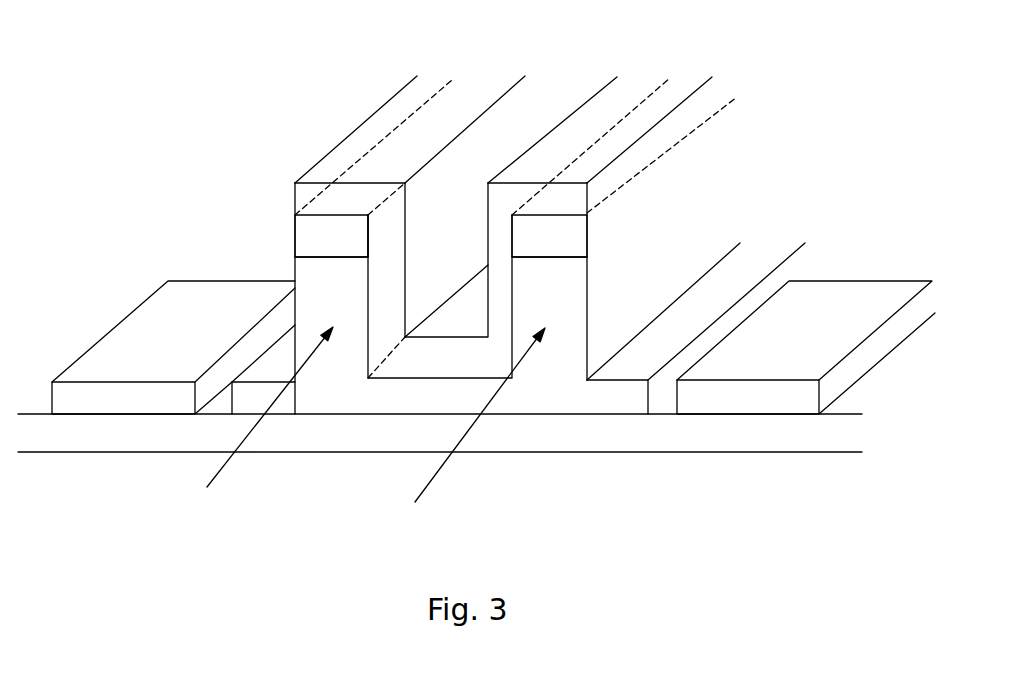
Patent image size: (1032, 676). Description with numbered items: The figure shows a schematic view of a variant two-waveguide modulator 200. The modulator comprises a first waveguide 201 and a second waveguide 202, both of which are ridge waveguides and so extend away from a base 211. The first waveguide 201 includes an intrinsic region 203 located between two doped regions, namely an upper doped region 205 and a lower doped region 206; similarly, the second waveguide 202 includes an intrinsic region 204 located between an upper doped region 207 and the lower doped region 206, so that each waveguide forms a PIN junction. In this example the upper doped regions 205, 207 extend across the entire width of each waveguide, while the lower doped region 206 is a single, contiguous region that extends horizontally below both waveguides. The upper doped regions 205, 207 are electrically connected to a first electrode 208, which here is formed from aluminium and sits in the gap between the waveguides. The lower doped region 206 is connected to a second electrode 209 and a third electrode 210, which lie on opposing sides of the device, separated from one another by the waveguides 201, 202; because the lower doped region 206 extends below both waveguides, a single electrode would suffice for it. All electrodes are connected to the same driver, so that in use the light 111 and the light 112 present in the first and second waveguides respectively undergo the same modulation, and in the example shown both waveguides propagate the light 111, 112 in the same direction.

The two-waveguide modulator 200 is at (166, 147).
The first waveguide 201 is at (398, 157).
The second waveguide 202 is at (635, 135).
The intrinsic region 203 is at (322, 283).
The intrinsic region 204 is at (572, 292).
The upper doped region 205 is at (307, 238).
The lower doped region 206 is at (310, 433).
The upper doped region 207 is at (573, 235).
The first electrode 208 is at (418, 362).
The second electrode 209 is at (168, 280).
The third electrode 210 is at (842, 292).
The base 211 is at (590, 402).
The light 111 is at (218, 470).
The light 112 is at (450, 460).